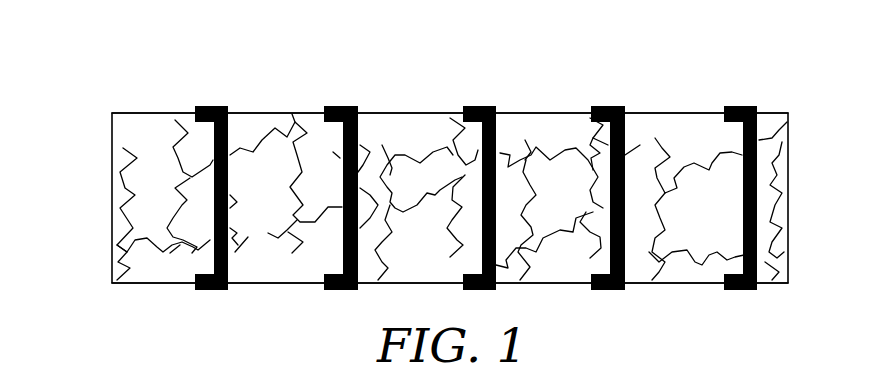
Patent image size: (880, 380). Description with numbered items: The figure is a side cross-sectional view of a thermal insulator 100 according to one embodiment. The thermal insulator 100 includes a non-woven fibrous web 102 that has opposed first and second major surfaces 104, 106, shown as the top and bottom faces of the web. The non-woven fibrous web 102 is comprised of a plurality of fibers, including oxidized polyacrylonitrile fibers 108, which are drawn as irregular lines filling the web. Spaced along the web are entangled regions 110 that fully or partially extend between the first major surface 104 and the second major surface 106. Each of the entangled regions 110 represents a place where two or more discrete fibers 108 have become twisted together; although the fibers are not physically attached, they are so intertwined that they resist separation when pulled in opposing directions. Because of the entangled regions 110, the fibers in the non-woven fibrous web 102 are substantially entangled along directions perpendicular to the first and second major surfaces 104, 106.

The thermal insulator 100 is at (715, 48).
The non-woven fibrous web 102 is at (773, 113).
The first major surface 104 is at (552, 113).
The second major surface 106 is at (562, 283).
The oxidized polyacrylonitrile fibers 108 is at (173, 152).
The entangled regions 110 is at (327, 107).